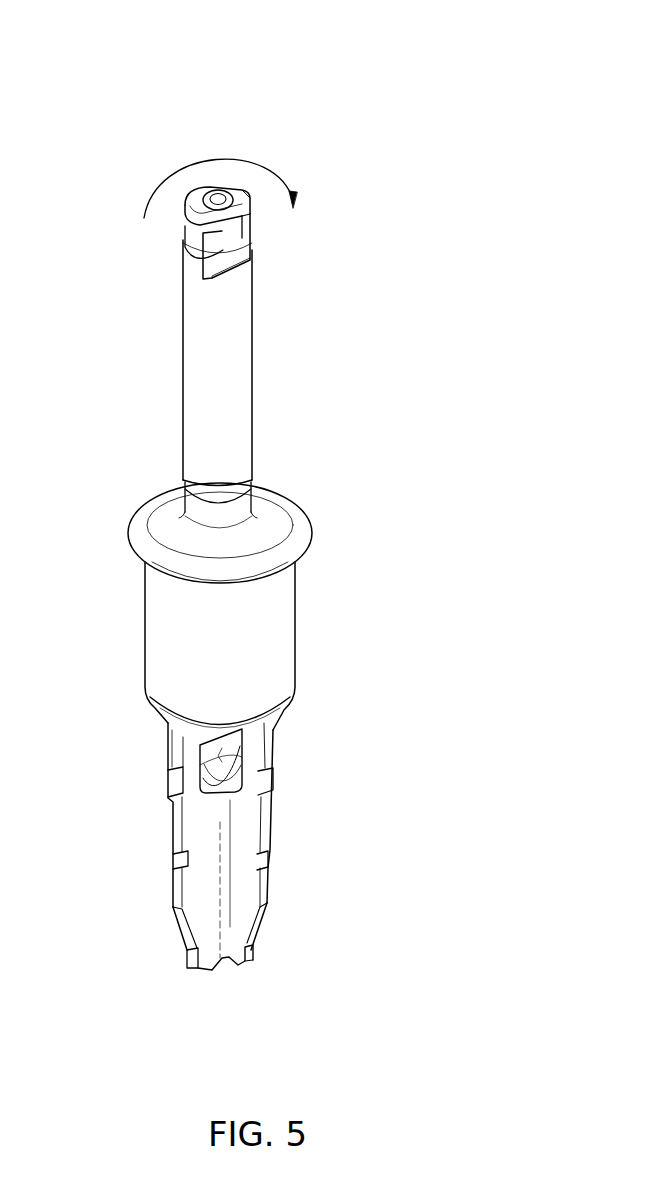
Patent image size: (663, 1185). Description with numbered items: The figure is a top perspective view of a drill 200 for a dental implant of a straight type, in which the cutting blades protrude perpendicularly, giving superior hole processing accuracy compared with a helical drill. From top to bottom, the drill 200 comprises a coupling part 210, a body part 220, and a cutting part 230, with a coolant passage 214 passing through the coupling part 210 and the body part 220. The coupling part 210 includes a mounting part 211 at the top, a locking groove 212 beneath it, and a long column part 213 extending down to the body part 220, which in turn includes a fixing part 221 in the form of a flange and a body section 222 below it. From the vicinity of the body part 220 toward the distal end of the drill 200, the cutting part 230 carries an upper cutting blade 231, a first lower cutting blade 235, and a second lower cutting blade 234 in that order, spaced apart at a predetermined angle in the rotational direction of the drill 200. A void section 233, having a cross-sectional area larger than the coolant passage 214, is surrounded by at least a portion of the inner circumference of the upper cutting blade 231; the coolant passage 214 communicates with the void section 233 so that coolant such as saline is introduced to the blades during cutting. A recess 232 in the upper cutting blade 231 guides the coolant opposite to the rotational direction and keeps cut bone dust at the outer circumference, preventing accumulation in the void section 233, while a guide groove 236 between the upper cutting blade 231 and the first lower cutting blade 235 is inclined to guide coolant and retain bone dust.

The drill 200 is at (353, 107).
The coupling part 210 is at (312, 358).
The mounting part 211 is at (245, 221).
The locking groove 212 is at (246, 253).
The column part 213 is at (238, 430).
The coolant passage 214 is at (219, 196).
The body part 220 is at (312, 624).
The fixing part 221 is at (308, 514).
The body section 222 is at (165, 645).
The cutting part 230 is at (287, 842).
The upper cutting blade 231 is at (172, 827).
The recess 232 is at (170, 784).
The void section 233 is at (243, 757).
The second lower cutting blade 234 is at (187, 956).
The first lower cutting blade 235 is at (186, 931).
The guide groove 236 is at (178, 858).